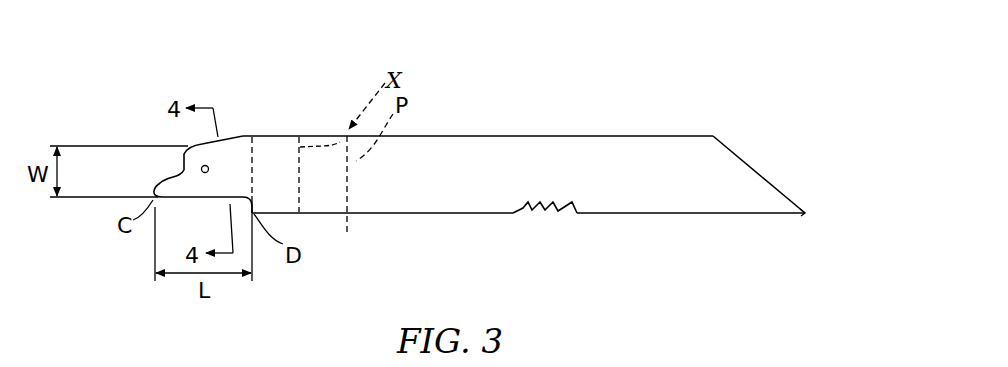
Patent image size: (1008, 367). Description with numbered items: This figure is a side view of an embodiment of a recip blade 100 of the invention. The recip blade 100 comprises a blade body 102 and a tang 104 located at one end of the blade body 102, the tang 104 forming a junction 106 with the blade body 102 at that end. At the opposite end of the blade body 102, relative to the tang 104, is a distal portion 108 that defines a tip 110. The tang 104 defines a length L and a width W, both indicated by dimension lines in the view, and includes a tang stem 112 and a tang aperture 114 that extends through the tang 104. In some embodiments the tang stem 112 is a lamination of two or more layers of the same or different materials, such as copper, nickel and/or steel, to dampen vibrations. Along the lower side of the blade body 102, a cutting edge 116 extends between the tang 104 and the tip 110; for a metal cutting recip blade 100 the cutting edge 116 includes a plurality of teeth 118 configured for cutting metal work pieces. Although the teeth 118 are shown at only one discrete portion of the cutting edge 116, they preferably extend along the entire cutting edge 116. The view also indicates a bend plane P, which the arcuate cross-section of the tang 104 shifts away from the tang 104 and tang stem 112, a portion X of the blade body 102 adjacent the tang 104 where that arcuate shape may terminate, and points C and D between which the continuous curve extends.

The recip blade 100 is at (515, 52).
The blade body 102 is at (545, 153).
The tang 104 is at (203, 147).
The junction 106 is at (265, 168).
The distal portion 108 is at (745, 173).
The tip 110 is at (805, 213).
The tang stem 112 is at (165, 190).
The tang aperture 114 is at (201, 169).
The cutting edge 116 is at (397, 215).
The teeth 118 is at (565, 213).